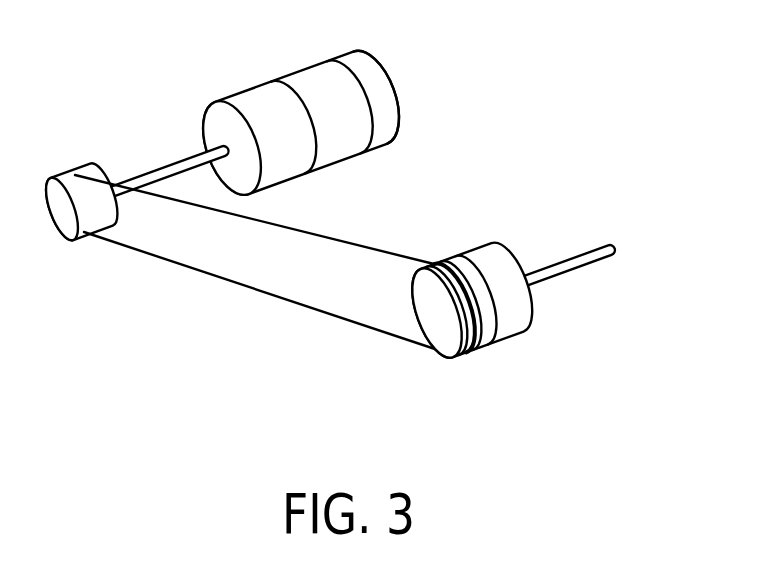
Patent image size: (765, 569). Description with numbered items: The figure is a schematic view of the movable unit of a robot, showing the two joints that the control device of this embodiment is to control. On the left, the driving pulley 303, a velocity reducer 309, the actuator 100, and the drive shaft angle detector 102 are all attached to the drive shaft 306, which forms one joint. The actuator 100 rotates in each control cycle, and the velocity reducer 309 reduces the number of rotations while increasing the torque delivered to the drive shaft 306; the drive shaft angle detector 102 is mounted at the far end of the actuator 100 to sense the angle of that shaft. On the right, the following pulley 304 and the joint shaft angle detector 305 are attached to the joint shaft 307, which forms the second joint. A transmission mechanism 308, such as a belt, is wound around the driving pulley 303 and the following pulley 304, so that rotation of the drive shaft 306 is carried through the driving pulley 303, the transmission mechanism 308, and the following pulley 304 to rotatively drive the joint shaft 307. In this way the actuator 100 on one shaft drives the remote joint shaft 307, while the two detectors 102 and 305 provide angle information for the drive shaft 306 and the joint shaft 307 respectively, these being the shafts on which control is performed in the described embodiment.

The actuator 100 is at (308, 77).
The drive shaft angle detector 102 is at (383, 88).
The driving pulley 303 is at (88, 170).
The following pulley 304 is at (447, 356).
The joint shaft angle detector 305 is at (523, 317).
The drive shaft 306 is at (165, 163).
The joint shaft 307 is at (578, 257).
The transmission mechanism 308 is at (350, 240).
The velocity reducer 309 is at (248, 90).